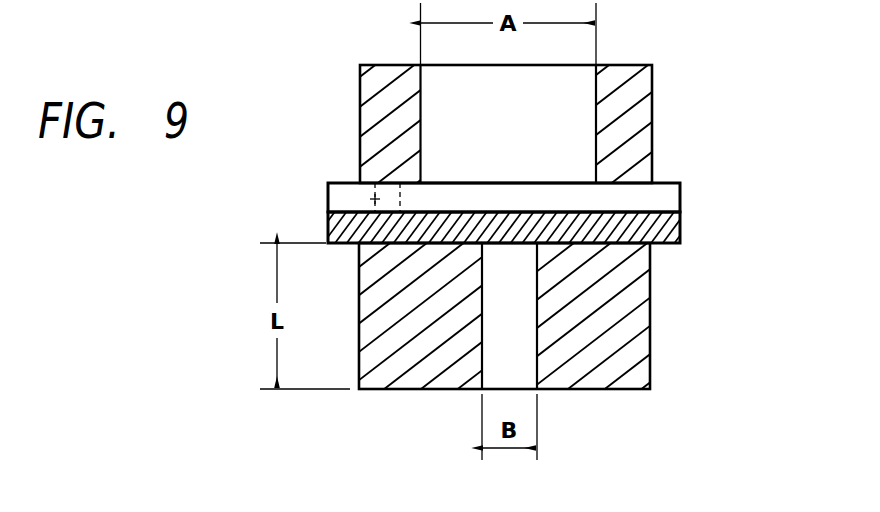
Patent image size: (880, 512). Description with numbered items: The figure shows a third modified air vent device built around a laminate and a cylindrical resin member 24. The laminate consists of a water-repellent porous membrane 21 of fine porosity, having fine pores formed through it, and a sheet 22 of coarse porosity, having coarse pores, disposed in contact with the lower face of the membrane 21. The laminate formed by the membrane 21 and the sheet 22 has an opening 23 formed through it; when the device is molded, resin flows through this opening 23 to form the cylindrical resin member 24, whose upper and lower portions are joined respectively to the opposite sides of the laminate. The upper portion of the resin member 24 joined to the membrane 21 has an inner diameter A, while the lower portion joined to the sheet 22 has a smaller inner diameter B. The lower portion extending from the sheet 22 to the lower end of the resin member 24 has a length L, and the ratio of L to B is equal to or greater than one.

The water-repellent porous membrane 21 is at (662, 192).
The sheet 22 is at (680, 227).
The opening 23 is at (370, 197).
The cylindrical resin member 24 is at (638, 105).